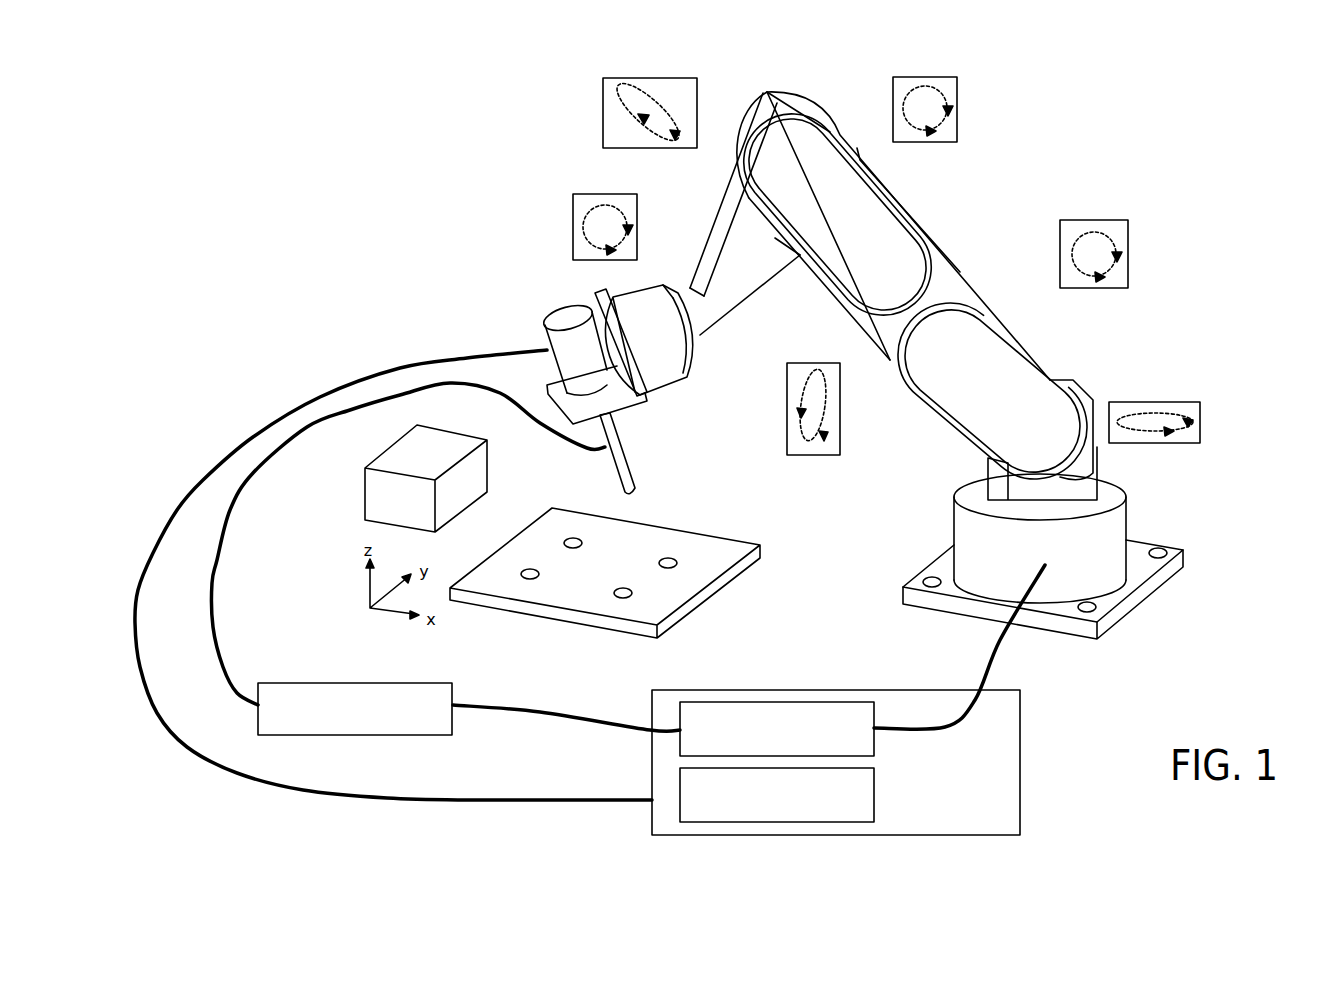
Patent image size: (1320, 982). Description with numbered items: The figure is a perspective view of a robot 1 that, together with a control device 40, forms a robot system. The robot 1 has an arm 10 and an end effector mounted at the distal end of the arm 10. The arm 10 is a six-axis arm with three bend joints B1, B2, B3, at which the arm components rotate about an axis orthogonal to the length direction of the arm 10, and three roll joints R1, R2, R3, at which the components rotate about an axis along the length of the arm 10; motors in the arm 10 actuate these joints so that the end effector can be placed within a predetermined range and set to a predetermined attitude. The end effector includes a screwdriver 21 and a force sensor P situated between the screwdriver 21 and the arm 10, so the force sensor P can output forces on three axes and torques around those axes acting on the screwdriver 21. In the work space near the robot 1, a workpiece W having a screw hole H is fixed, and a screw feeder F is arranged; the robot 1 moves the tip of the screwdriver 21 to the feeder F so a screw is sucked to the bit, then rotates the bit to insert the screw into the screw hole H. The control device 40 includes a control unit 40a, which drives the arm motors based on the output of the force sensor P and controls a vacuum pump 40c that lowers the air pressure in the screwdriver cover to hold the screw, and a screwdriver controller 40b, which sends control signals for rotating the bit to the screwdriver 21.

The robot 1 is at (1093, 87).
The arm 10 is at (917, 228).
The screwdriver 21 is at (545, 332).
The force sensor P is at (690, 382).
The screw feeder F is at (365, 498).
The workpiece W is at (727, 583).
The screw hole H is at (530, 579).
The roll joint R1 is at (1137, 443).
The roll joint R2 is at (662, 148).
The roll joint R3 is at (787, 418).
The bend joint B1 is at (1060, 260).
The bend joint B2 is at (893, 120).
The bend joint B3 is at (637, 242).
The control device 40 is at (831, 704).
The control unit 40a is at (840, 702).
The screwdriver controller 40b is at (677, 808).
The vacuum pump 40c is at (390, 683).